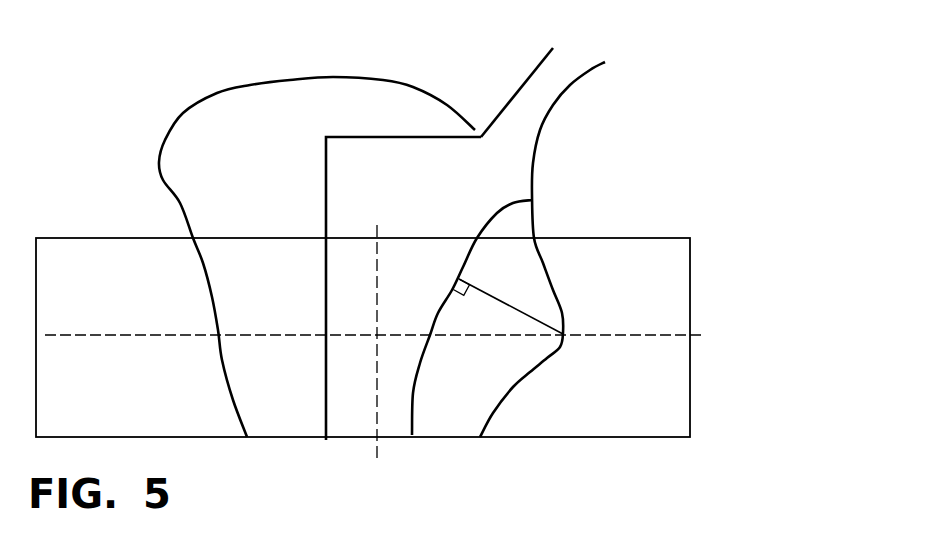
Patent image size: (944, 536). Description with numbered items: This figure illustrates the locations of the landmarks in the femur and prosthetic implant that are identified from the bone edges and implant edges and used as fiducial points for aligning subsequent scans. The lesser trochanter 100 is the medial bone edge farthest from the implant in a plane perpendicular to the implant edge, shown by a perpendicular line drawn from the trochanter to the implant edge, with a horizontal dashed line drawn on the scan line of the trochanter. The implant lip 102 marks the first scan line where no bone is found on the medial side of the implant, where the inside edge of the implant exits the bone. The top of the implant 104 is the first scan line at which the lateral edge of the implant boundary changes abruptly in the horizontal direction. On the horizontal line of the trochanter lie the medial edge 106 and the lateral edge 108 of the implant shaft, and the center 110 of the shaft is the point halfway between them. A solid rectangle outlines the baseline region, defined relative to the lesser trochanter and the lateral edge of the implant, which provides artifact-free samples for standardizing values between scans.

The lesser trochanter 100 is at (563, 335).
The implant lip 102 is at (545, 201).
The top of the implant 104 is at (320, 130).
The medial edge of the shaft of the implant 106 is at (429, 335).
The lateral edge of the shaft of the implant 108 is at (326, 335).
The center of the shaft of the implant 110 is at (377, 335).